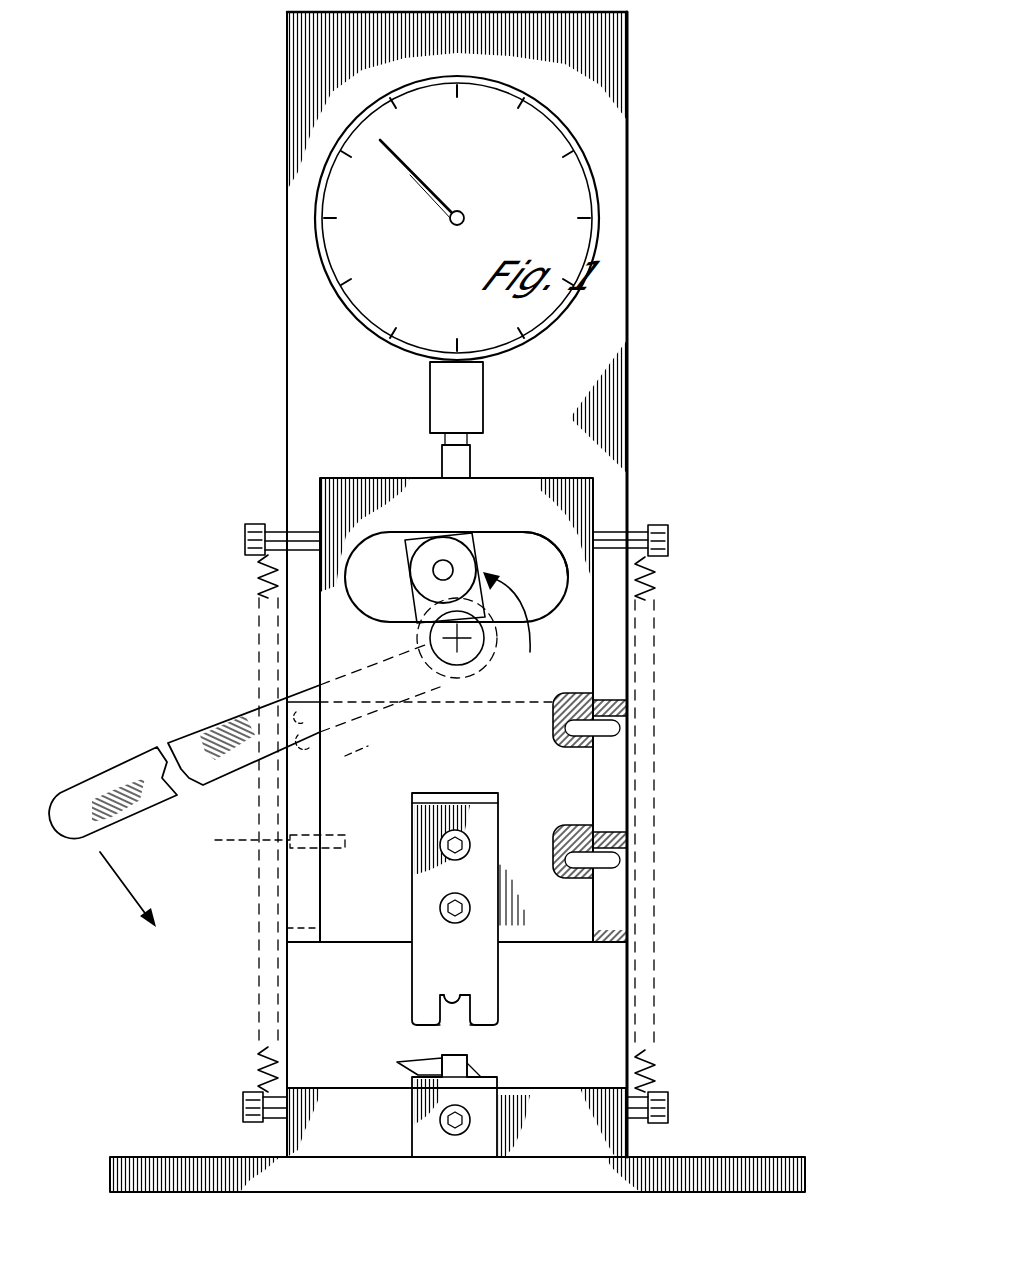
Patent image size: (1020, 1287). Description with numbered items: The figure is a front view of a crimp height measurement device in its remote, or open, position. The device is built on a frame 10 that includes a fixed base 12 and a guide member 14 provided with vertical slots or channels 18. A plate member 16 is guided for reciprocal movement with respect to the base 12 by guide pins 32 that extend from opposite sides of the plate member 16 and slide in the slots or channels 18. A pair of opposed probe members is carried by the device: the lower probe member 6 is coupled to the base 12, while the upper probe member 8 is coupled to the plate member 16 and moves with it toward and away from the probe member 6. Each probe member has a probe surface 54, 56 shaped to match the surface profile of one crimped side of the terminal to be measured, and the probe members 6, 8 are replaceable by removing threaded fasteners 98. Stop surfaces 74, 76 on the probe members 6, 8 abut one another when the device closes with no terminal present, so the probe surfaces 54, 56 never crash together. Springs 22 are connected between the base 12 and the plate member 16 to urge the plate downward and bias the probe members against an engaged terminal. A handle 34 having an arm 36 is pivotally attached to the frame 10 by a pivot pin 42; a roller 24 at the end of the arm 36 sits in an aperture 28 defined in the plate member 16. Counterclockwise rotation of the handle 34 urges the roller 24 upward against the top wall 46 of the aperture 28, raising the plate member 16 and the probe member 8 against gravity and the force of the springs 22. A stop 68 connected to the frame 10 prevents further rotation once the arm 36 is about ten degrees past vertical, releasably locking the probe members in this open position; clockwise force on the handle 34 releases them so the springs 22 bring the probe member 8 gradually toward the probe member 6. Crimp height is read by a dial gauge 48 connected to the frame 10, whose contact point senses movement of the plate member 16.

The probe member 6 is at (500, 1118).
The probe member 8 is at (412, 848).
The frame 10 is at (287, 319).
The fixed base 12 is at (286, 1141).
The guide member 14 is at (320, 908).
The plate member 16 is at (474, 752).
The vertical slots or channels 18 is at (610, 885).
The springs 22 is at (258, 578).
The roller 24 is at (458, 536).
The aperture 28 is at (395, 532).
The guide pins 32 is at (630, 722).
The handle 34 is at (135, 748).
The arm 36 is at (410, 603).
The pivot pin 42 is at (497, 655).
The top wall 46 is at (498, 536).
The dial gauge 48 is at (560, 78).
The probe surface 54 is at (452, 1055).
The probe surface 56 is at (443, 990).
The stop 68 is at (380, 742).
The stop surface 74 is at (397, 1063).
The stop surface 76 is at (412, 1026).
The threaded fasteners 98 is at (468, 845).